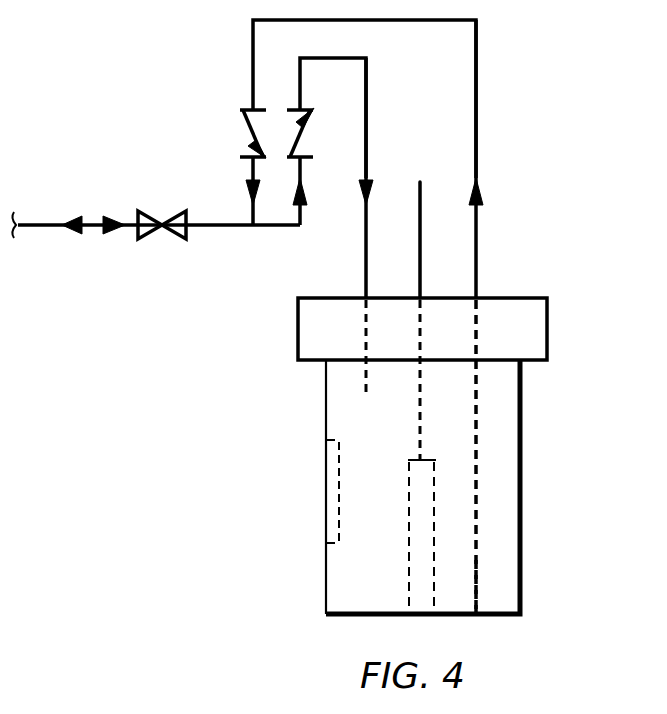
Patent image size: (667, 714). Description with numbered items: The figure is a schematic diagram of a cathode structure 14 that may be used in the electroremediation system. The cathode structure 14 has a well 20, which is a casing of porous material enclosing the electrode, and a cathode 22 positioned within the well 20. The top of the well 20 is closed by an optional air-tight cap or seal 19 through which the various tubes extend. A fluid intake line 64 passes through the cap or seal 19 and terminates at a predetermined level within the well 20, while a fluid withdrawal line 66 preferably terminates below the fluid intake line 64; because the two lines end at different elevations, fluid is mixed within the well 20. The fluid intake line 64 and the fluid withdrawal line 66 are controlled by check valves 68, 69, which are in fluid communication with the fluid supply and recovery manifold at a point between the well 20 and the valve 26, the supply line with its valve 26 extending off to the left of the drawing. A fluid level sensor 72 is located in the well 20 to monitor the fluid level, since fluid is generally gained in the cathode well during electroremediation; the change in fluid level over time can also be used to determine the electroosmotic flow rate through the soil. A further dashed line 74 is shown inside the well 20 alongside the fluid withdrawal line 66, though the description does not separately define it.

The cathode structure 14 is at (604, 286).
The air-tight cap or seal 19 is at (310, 296).
The well 20 is at (523, 432).
The cathode 22 is at (436, 552).
The valve 26 is at (163, 228).
The fluid intake line 64 is at (368, 80).
The fluid withdrawal line 66 is at (480, 116).
The check valve 68 is at (289, 110).
The check valve 69 is at (250, 128).
The fluid level sensor 72 is at (334, 480).
The return line 74 is at (478, 582).